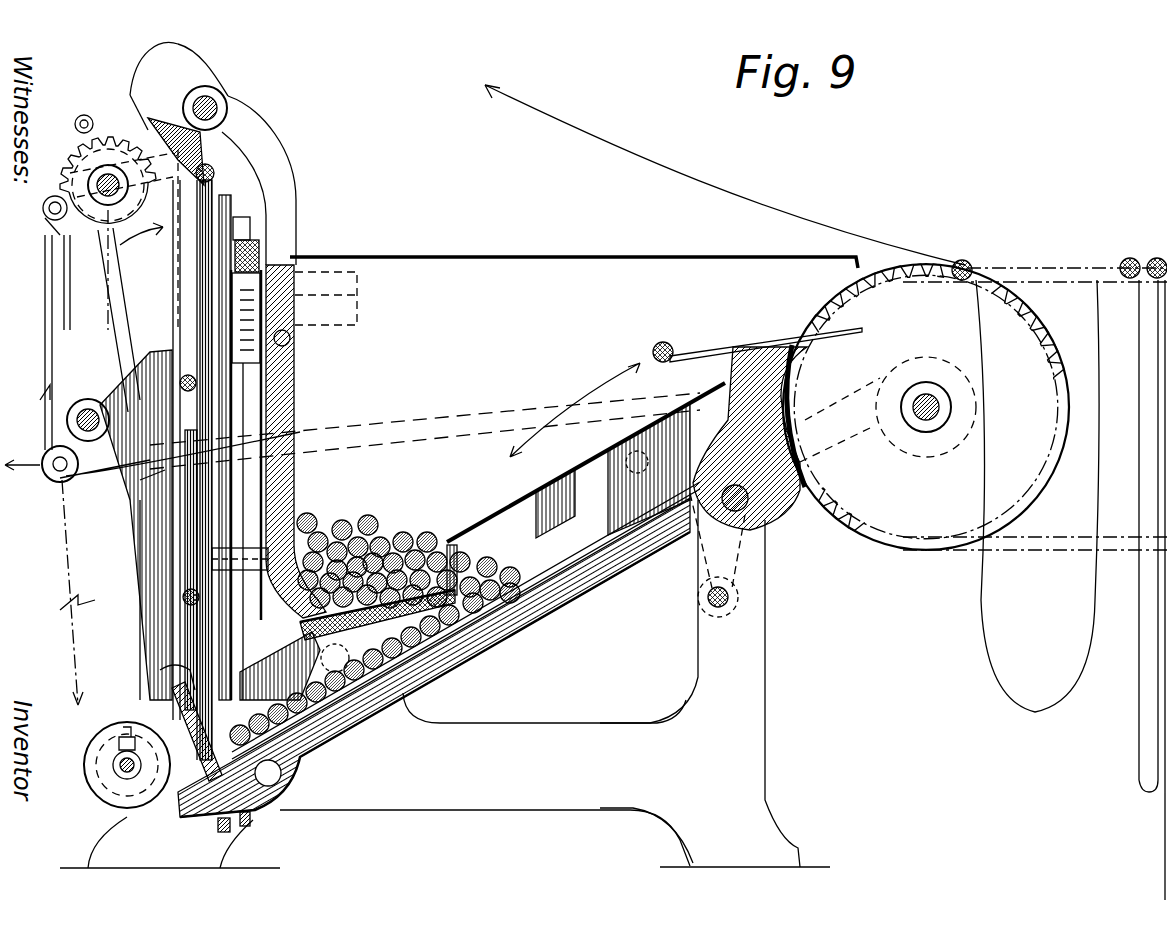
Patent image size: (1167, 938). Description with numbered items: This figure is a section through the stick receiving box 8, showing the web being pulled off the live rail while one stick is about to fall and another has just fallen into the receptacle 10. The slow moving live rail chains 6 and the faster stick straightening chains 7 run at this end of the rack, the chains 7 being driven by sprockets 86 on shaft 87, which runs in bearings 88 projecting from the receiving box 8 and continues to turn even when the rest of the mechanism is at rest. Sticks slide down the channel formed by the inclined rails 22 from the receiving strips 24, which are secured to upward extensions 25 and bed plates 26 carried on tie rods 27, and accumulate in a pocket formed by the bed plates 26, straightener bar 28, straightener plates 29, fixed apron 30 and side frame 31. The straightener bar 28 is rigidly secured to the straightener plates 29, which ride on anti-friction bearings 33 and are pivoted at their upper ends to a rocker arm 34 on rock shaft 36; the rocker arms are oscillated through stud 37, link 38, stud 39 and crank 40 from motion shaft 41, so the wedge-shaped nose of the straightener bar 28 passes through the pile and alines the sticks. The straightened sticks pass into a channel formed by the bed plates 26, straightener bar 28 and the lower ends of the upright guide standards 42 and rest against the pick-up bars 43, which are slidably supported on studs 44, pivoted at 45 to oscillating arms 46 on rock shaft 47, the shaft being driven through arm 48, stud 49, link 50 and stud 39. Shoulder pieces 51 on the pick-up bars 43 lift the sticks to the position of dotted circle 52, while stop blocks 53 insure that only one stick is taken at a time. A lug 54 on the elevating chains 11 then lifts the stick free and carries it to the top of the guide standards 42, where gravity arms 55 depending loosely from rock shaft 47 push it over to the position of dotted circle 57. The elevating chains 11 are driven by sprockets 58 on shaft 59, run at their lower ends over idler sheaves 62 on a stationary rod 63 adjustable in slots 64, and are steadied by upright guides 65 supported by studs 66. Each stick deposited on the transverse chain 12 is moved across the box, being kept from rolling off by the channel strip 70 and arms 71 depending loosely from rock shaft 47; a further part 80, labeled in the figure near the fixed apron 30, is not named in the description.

The live rail chains 6 is at (1073, 283).
The stick straightening chains 7 is at (1062, 270).
The stick receiving box 8 is at (586, 522).
The receptacle 10 is at (408, 546).
The elevating chains 11 is at (60, 525).
The transverse chain 12 is at (255, 235).
The inclined rails 22 is at (477, 637).
The receiving strips 24 is at (732, 415).
The upward extensions 25 is at (763, 393).
The bed plates 26 is at (783, 503).
The tie rods 27 is at (790, 497).
The straightener bar 28 is at (308, 628).
The straightener plates 29 is at (511, 531).
The fixed apron 30 is at (285, 412).
The side frame 31 is at (445, 601).
The anti-friction bearings 33 is at (383, 660).
The rocker arm 34 is at (692, 543).
The rock shaft 36 is at (730, 597).
The stud 37 is at (700, 378).
The link 38 is at (470, 418).
The stud 39 is at (55, 458).
The crank 40 is at (55, 445).
The motion shaft 41 is at (88, 410).
The upright guide standards 42 is at (222, 508).
The pick-up bars 43 is at (281, 832).
The studs 44 is at (195, 812).
The pivotal connection 45 is at (92, 135).
The oscillating arms 46 is at (118, 165).
The rock shaft 47 is at (228, 108).
The arm 48 is at (60, 196).
The stud 49 is at (73, 217).
The link 50 is at (46, 298).
The shoulder pieces 51 is at (330, 808).
The dotted circle 52 is at (175, 668).
The stop blocks 53 is at (175, 700).
The lugs 54 is at (87, 590).
The gravity arms 55 is at (128, 246).
The dotted circle 57 is at (248, 212).
The sprockets 58 is at (74, 126).
The shaft 59 is at (118, 180).
The idler sheaves 62 is at (90, 790).
The stationary rod 63 is at (118, 774).
The slots 64 is at (120, 757).
The upright guides 65 is at (165, 500).
The studs 66 is at (158, 362).
The channel strip 70 is at (227, 218).
The arms 71 is at (278, 150).
The plate 80 is at (262, 352).
The sprockets 86 is at (900, 552).
The shaft 87 is at (928, 393).
The bearings 88 is at (926, 458).